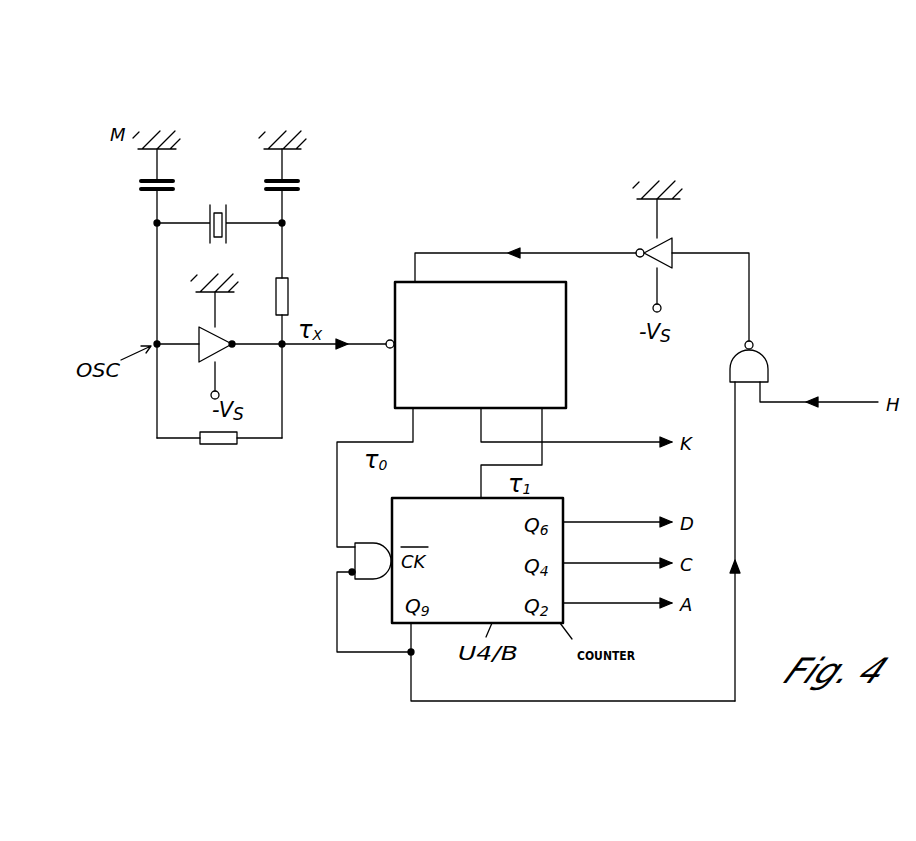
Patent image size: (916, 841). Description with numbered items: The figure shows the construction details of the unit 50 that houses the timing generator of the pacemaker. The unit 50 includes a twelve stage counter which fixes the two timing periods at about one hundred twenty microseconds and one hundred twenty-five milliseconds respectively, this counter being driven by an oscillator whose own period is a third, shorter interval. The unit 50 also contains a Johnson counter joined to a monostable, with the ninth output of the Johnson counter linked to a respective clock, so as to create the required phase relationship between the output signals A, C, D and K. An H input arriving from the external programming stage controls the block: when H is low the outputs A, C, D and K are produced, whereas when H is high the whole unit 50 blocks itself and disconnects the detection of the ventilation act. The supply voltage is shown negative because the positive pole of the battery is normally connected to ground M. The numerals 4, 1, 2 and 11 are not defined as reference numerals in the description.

The unit 50 is at (783, 302).
The counter U4/A 4 is at (398, 284).
The output Q1 of counter U4/A 1 is at (384, 464).
The output Q2 of counter U4/A 2 is at (569, 414).
The output Q11 of counter U4/A 11 is at (518, 439).